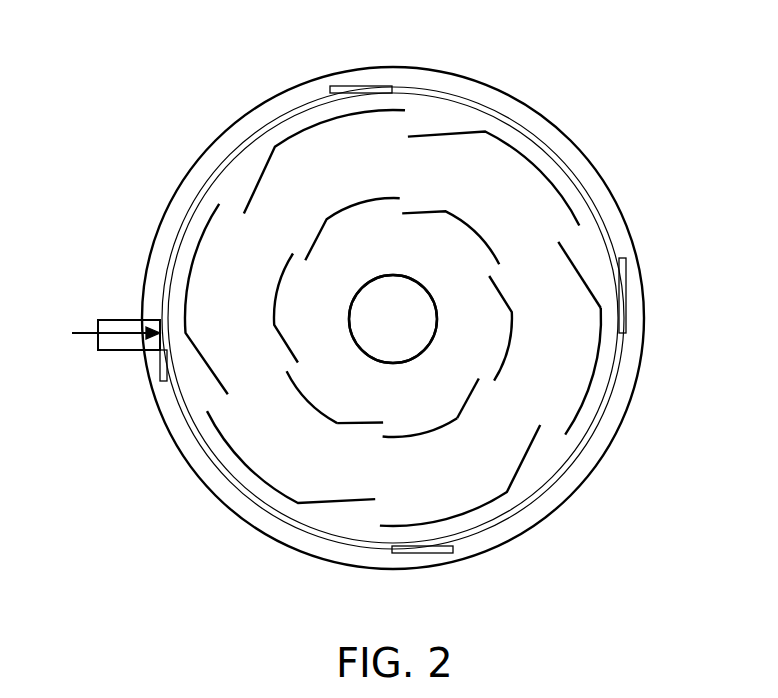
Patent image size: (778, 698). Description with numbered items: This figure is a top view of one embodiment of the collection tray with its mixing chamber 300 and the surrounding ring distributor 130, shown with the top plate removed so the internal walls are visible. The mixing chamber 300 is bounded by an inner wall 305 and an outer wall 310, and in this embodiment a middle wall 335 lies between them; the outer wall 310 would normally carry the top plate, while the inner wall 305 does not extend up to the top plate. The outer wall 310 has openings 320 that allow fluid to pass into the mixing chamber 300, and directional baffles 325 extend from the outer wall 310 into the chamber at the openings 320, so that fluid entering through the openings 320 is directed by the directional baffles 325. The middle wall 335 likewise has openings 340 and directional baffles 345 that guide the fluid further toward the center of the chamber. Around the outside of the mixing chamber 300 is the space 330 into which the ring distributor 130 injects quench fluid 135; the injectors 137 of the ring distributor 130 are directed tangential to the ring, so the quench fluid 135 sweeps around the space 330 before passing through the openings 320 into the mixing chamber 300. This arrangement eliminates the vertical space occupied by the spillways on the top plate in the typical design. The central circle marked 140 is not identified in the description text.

The ring distributor 130 is at (577, 143).
The quench fluid 135 is at (115, 332).
The injectors 137 is at (355, 86).
The outlet 140 is at (418, 331).
The mixing chamber 300 is at (372, 176).
The inner wall 305 is at (411, 276).
The outer wall 310 is at (570, 205).
The openings 320 is at (593, 272).
The directional baffles 325 is at (577, 279).
The space 330 is at (607, 352).
The middle wall 335 is at (440, 430).
The openings 340 is at (375, 434).
The directional baffles 345 is at (352, 422).